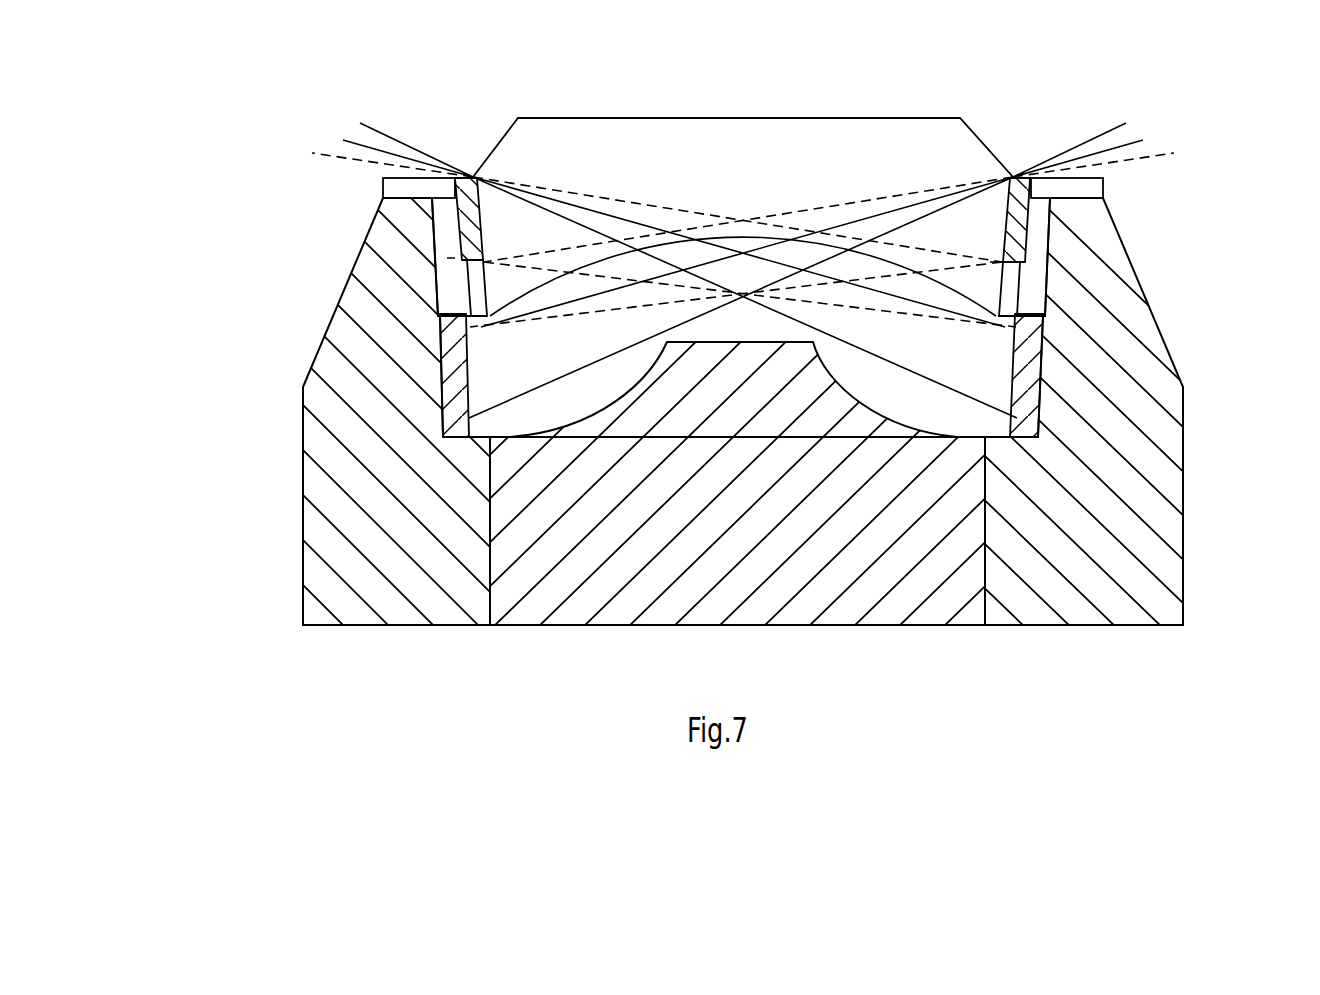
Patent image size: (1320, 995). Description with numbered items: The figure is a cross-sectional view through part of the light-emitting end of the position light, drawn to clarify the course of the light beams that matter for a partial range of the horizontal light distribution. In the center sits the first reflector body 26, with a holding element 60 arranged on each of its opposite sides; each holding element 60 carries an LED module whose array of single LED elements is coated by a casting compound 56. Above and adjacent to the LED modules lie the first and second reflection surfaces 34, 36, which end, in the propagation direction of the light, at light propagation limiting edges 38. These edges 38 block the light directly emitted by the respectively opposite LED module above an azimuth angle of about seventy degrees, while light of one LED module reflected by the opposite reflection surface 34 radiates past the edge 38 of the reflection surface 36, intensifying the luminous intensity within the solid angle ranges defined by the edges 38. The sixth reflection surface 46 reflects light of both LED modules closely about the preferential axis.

The first reflector body 26 is at (653, 582).
The first reflection surface 34 is at (1003, 220).
The second reflection surface 36 is at (483, 222).
The light propagation limiting edge 38 is at (473, 177).
The sixth reflection surface 46 is at (753, 175).
The casting compound 56 is at (458, 386).
The holding element 60 is at (358, 562).